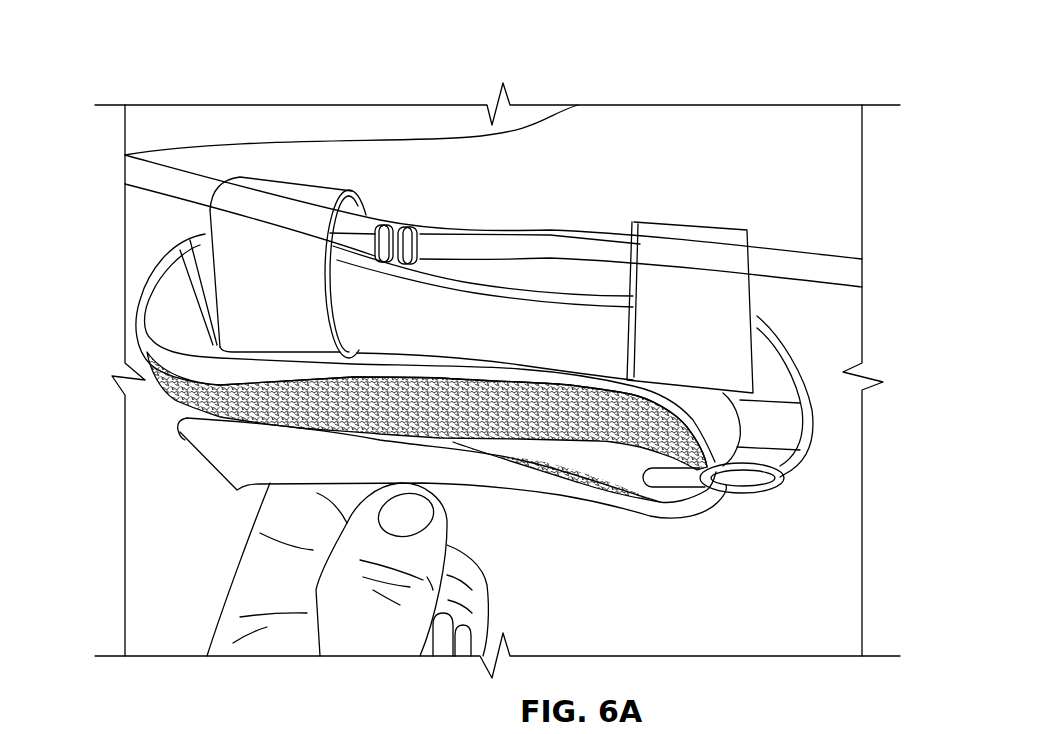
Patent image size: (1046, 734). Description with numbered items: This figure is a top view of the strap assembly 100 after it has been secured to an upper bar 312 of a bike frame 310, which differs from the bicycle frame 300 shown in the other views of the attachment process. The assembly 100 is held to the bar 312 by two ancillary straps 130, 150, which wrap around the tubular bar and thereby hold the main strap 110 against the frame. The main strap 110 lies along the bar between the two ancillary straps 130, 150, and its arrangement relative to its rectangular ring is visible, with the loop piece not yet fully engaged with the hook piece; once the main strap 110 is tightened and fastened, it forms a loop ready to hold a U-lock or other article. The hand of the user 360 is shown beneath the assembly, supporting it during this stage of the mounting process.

The bicycle frame 300 is at (776, 46).
The bike frame 310 is at (841, 227).
The upper bar 312 is at (148, 237).
The ancillary strap 130 is at (273, 190).
The ancillary strap 150 is at (698, 232).
The strap assembly 100 is at (514, 500).
The main strap 110 is at (175, 422).
The user 360 is at (299, 634).